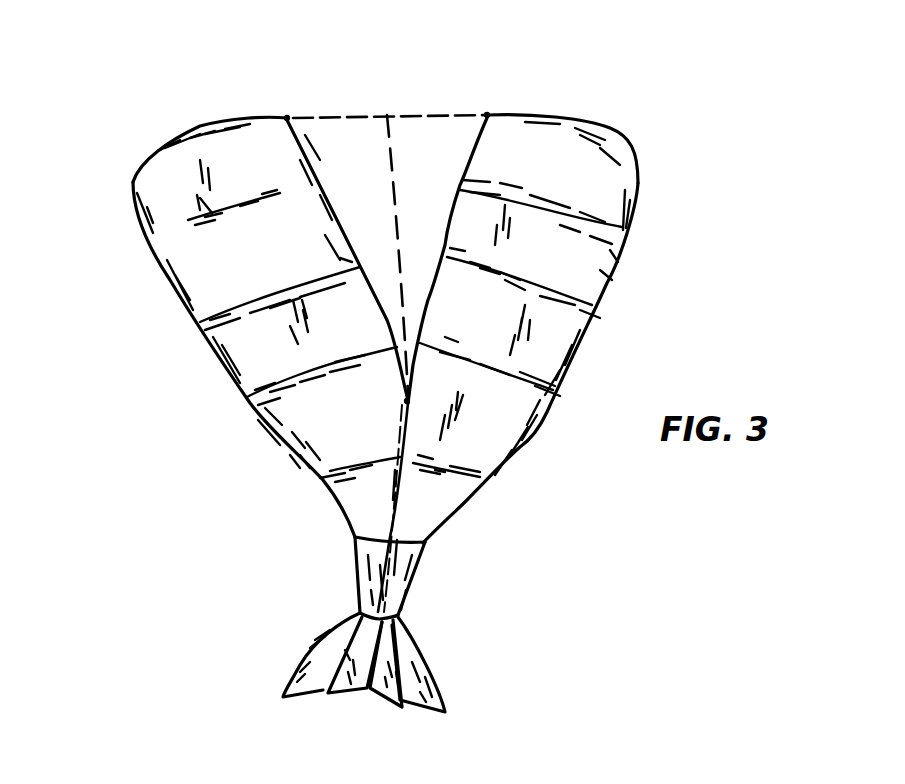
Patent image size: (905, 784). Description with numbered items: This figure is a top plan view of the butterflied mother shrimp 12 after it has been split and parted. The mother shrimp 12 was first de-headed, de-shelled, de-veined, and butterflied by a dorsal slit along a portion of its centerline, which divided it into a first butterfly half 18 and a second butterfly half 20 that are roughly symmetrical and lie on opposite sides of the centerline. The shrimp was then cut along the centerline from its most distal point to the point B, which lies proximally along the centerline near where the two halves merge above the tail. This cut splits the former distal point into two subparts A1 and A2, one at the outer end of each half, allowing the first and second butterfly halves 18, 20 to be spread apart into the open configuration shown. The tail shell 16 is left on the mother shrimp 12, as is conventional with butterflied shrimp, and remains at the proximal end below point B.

The butterflied mother shrimp 12 is at (548, 83).
The tail shell 16 is at (357, 583).
The first butterfly half 18 is at (133, 182).
The second butterfly half 20 is at (635, 152).
The subpart of point A A1 is at (287, 118).
The subpart of point A A2 is at (487, 115).
The point B is at (400, 407).